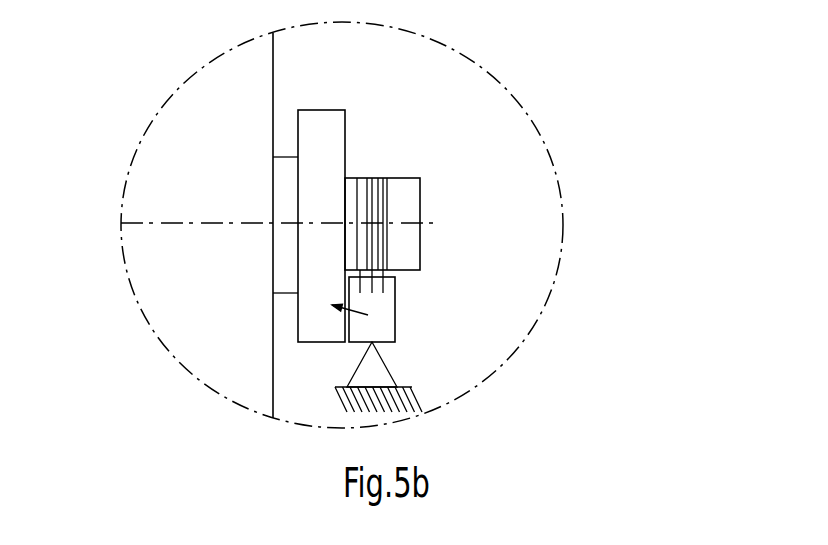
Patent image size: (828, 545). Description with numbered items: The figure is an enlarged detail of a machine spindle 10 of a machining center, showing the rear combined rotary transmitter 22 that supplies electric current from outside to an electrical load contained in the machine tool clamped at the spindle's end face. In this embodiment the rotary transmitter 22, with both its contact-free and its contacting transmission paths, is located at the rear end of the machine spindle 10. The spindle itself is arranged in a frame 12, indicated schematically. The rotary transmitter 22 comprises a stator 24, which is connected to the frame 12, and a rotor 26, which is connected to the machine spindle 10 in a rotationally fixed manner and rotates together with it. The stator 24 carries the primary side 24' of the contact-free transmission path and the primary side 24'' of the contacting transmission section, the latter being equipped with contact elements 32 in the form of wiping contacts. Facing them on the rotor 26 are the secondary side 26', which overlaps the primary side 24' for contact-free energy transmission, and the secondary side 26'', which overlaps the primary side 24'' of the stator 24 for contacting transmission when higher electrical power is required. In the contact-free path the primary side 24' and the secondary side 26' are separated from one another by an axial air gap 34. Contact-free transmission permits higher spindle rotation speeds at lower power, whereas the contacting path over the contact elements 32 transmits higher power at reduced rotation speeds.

The machine spindle 10 is at (235, 117).
The frame 12 is at (370, 365).
The rotary transmitter 22 is at (335, 344).
The stator 24 is at (431, 309).
The primary side of contact-free transmission path 24' is at (408, 334).
The primary side of contacting transmission section 24'' is at (501, 279).
The rotor 26 is at (373, 203).
The secondary side of rotor 26' is at (226, 225).
The secondary side of rotor for contacting transmission 26'' is at (442, 224).
The contact elements 32 is at (385, 252).
The axial air gap 34 is at (344, 342).